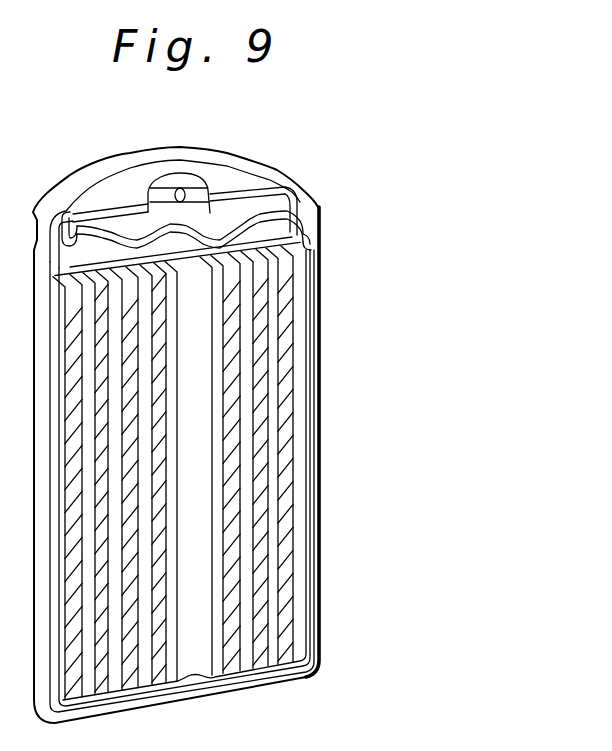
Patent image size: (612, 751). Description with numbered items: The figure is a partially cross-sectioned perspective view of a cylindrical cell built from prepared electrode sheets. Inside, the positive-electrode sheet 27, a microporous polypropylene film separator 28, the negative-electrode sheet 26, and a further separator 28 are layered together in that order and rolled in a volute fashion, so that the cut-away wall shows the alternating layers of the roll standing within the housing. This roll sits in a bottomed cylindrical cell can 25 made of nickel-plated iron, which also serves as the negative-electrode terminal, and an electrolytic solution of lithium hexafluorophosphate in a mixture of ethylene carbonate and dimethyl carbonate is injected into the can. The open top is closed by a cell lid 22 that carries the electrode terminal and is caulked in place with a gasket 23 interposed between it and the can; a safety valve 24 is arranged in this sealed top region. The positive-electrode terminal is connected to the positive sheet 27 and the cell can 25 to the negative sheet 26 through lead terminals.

The cell lid 22 is at (187, 180).
The gasket 23 is at (295, 197).
The safety valve 24 is at (310, 233).
The cell can 25 is at (310, 352).
The negative-electrode sheet 26 is at (240, 460).
The positive-electrode sheet 27 is at (260, 513).
The separator 28 is at (243, 577).